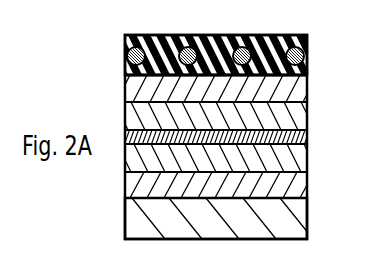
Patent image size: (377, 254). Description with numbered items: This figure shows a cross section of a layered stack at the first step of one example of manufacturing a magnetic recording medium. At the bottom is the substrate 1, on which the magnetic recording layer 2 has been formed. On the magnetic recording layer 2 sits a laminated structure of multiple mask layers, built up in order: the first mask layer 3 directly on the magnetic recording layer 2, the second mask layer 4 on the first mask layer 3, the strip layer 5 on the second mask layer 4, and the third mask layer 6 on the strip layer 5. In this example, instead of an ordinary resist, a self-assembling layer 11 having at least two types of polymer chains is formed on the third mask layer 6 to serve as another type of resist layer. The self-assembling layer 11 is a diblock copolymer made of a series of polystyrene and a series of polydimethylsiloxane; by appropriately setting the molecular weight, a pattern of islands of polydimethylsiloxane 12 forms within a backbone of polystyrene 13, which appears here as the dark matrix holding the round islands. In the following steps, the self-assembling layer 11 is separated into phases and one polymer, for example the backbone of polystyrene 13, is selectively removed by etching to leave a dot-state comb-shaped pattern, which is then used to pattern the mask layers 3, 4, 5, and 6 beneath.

The substrate 1 is at (298, 223).
The magnetic recording layer 2 is at (298, 183).
The first mask layer 3 is at (300, 162).
The second mask layer 4 is at (303, 133).
The strip layer 5 is at (303, 115).
The third mask layer 6 is at (303, 92).
The self-assembling layer 11 is at (78, 4).
The islands of polydimethylsiloxane 12 is at (127, 56).
The backbone of polystyrene 13 is at (150, 36).